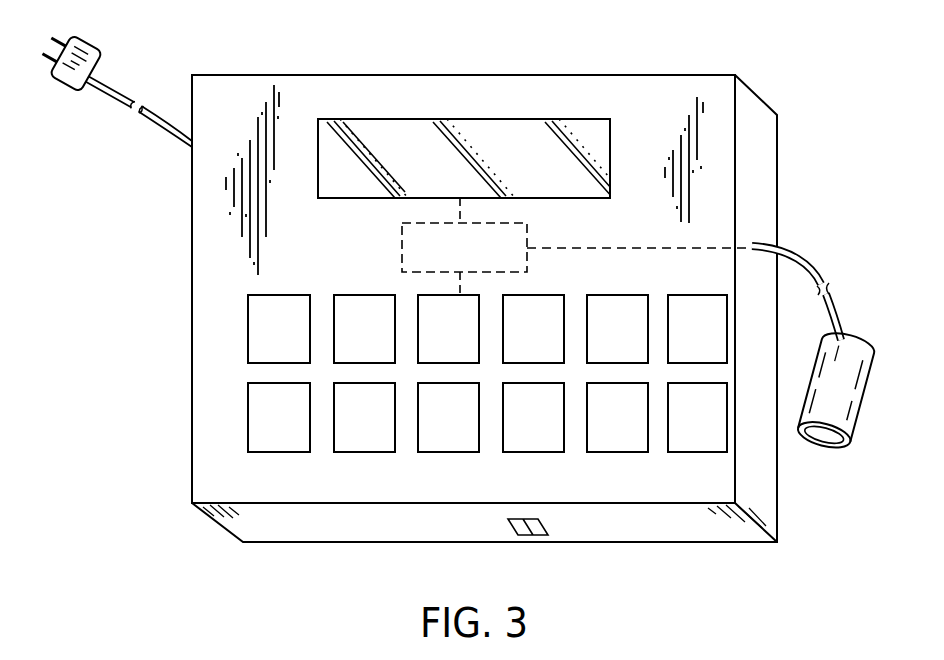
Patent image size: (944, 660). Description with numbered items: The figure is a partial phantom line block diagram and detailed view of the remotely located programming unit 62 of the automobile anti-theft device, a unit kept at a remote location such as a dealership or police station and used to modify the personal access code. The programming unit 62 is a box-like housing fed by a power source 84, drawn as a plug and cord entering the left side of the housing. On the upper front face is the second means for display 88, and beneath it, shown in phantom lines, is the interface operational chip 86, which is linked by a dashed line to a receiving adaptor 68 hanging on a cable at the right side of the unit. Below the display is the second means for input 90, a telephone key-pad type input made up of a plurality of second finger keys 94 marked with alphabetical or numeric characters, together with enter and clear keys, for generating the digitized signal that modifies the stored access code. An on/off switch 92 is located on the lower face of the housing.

The remotely located programming unit 62 is at (820, 174).
The receiving adaptor 68 is at (857, 348).
The power source 84 is at (68, 86).
The interface operational chip 86 is at (505, 222).
The second means for display 88 is at (508, 130).
The second means for input 90 is at (420, 377).
The on/off switch 92 is at (523, 531).
The second finger keys 94 is at (362, 301).